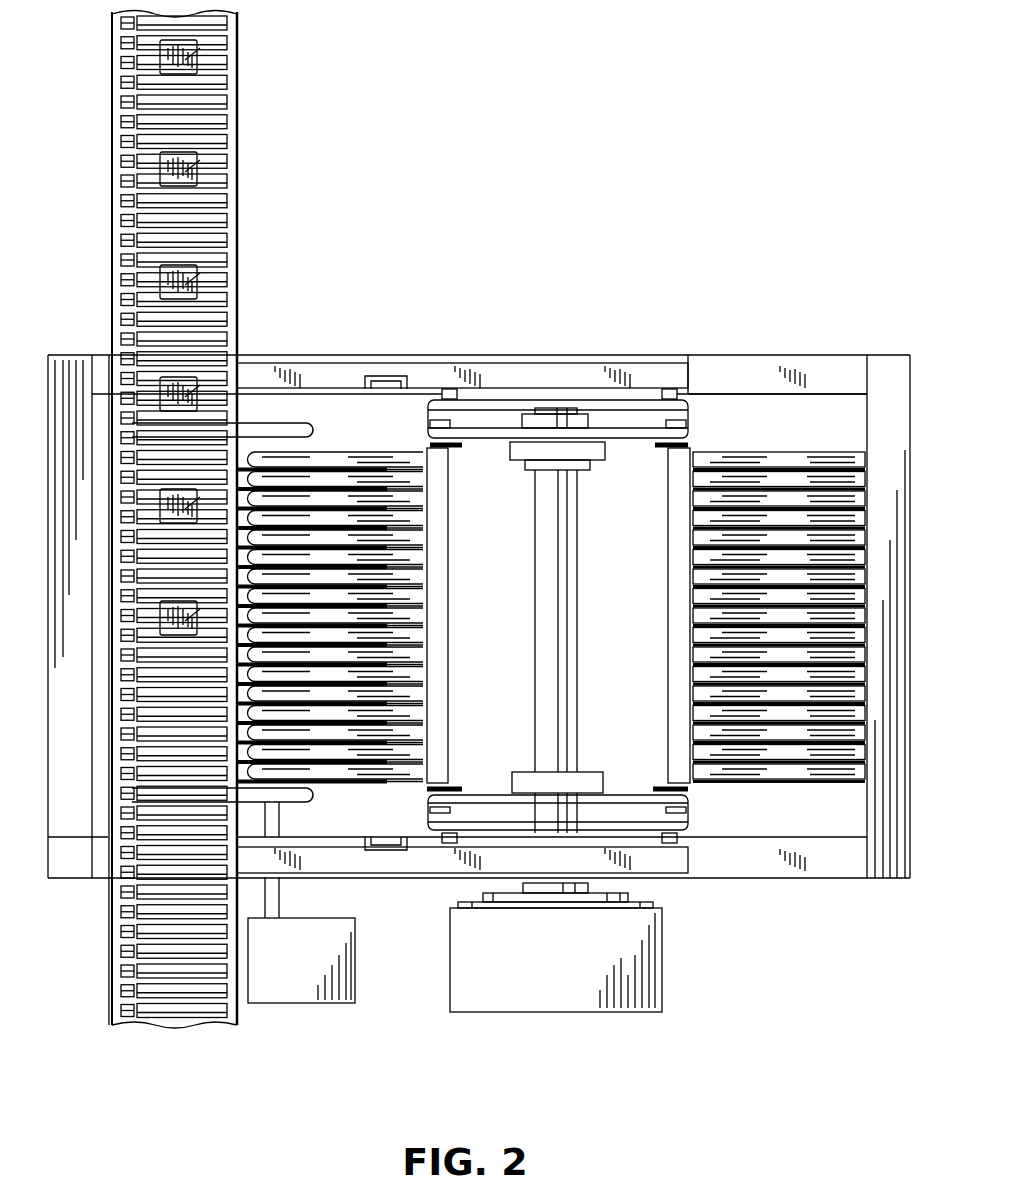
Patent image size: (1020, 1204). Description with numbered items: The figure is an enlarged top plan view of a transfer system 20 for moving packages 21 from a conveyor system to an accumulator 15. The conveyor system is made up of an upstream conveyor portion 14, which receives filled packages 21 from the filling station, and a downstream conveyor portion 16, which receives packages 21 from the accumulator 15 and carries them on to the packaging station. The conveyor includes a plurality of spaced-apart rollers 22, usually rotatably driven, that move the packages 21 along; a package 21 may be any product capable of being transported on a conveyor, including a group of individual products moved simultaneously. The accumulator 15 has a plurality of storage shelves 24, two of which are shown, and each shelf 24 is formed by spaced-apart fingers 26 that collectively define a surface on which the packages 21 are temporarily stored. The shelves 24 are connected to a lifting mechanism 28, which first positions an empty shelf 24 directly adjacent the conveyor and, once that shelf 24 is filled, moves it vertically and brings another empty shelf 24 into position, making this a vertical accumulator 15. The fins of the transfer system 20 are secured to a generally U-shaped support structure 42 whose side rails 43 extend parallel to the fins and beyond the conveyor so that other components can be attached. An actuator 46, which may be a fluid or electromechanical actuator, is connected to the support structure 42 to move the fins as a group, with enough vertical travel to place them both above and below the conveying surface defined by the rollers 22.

The upstream conveyor portion 14 is at (234, 218).
The accumulator 15 is at (703, 355).
The downstream conveyor portion 16 is at (107, 942).
The transfer system 20 is at (288, 414).
The package 21 is at (188, 58).
The roller 22 is at (224, 107).
The accumulator shelf 24 is at (346, 444).
The finger 26 is at (408, 519).
The lifting mechanism 28 is at (697, 798).
The support structure 42 is at (320, 795).
The side rail 43 is at (262, 428).
The actuator 46 is at (301, 990).